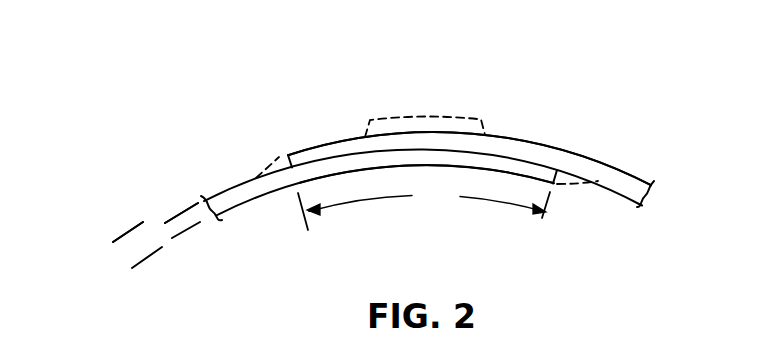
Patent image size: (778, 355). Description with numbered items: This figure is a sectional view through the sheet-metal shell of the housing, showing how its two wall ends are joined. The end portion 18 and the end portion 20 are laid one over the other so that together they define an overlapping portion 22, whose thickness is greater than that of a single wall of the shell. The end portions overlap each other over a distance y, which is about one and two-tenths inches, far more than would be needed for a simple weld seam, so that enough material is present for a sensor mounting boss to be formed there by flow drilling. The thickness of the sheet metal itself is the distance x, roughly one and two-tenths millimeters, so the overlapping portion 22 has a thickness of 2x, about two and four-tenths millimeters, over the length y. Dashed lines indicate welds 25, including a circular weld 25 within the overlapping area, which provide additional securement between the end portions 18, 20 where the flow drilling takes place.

The end portion 18 is at (628, 177).
The overlapping portion 22 is at (537, 143).
The end portion 20 is at (437, 167).
The weld 25 is at (273, 157).
The overlap distance y is at (424, 206).
The sheet metal thickness x is at (176, 217).
The overlapping portion thickness 2x is at (129, 232).